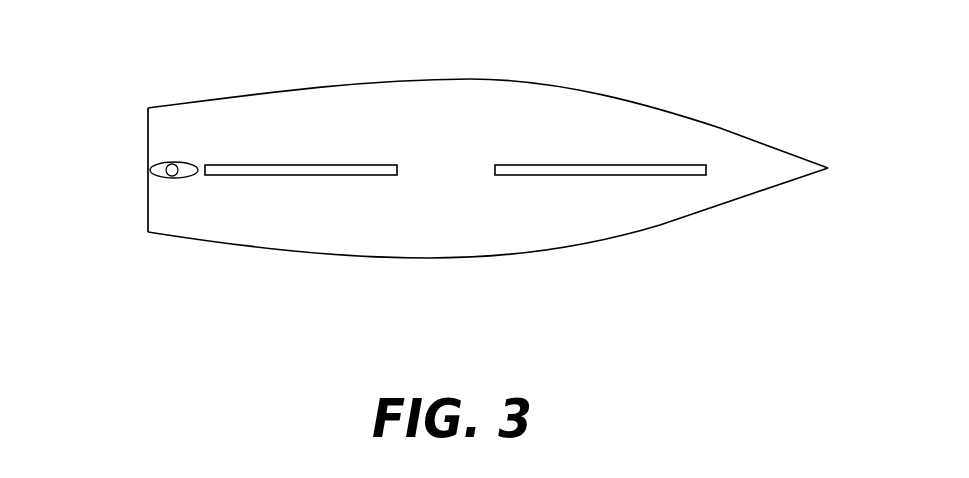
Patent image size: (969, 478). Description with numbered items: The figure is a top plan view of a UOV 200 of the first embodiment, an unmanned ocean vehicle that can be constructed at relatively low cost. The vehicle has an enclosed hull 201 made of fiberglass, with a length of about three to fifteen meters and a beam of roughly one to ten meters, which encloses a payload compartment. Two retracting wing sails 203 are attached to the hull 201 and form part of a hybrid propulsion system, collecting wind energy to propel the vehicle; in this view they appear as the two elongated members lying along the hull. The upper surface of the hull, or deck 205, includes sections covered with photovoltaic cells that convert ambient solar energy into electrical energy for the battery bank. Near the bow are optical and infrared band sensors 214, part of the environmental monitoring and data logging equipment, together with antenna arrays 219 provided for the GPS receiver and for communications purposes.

The UOV 200 is at (278, 281).
The enclosed hull 201 is at (703, 139).
The retracting wing sails 203 is at (542, 175).
The deck 205 is at (467, 132).
The optical and infrared band sensors 214 is at (148, 170).
The antenna arrays 219 is at (172, 166).